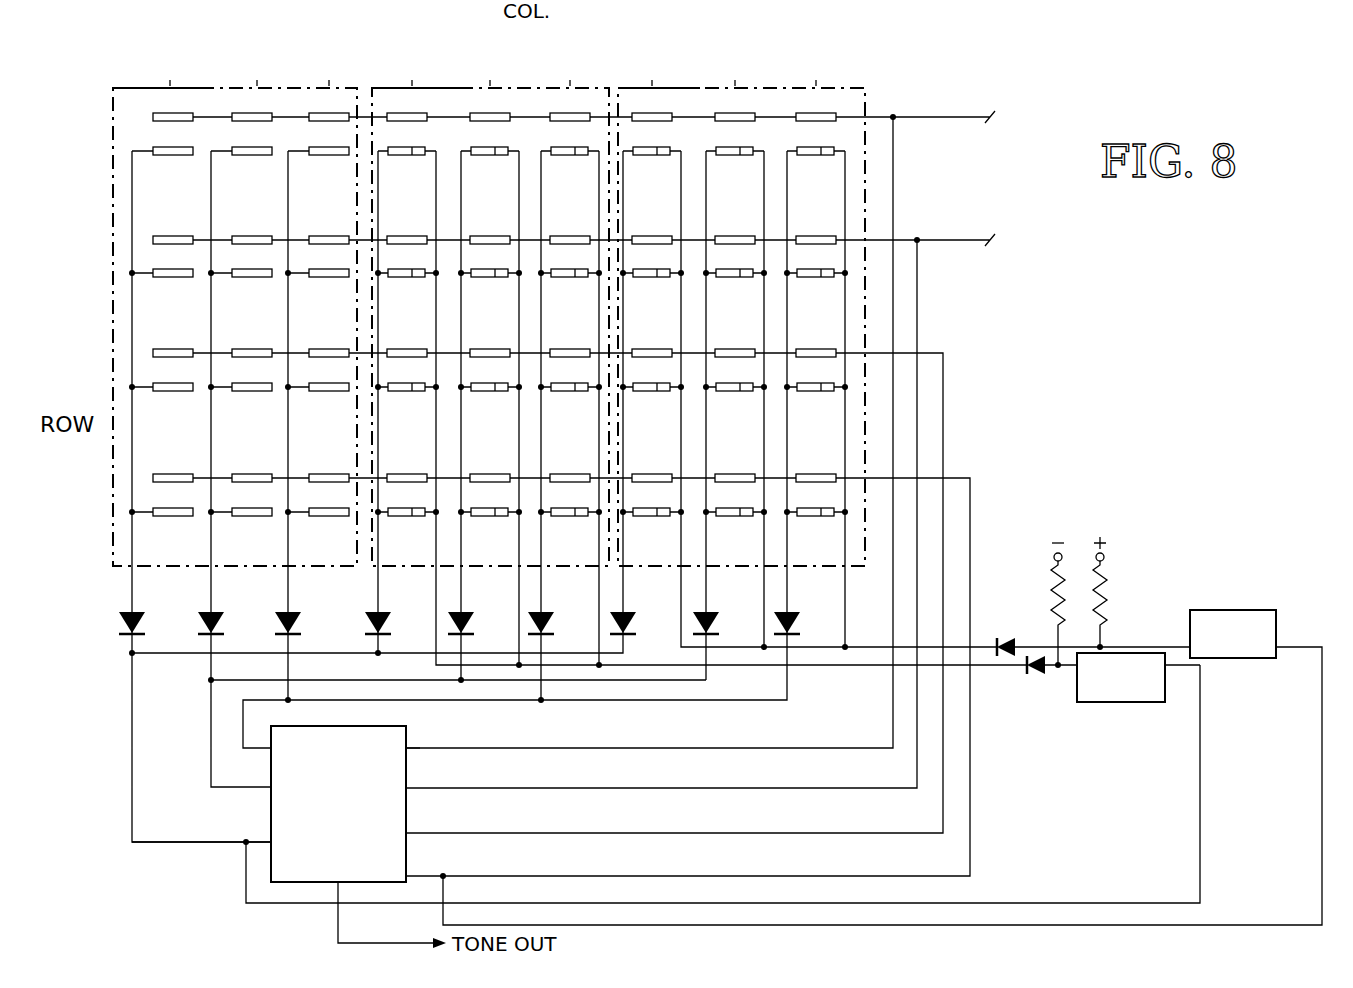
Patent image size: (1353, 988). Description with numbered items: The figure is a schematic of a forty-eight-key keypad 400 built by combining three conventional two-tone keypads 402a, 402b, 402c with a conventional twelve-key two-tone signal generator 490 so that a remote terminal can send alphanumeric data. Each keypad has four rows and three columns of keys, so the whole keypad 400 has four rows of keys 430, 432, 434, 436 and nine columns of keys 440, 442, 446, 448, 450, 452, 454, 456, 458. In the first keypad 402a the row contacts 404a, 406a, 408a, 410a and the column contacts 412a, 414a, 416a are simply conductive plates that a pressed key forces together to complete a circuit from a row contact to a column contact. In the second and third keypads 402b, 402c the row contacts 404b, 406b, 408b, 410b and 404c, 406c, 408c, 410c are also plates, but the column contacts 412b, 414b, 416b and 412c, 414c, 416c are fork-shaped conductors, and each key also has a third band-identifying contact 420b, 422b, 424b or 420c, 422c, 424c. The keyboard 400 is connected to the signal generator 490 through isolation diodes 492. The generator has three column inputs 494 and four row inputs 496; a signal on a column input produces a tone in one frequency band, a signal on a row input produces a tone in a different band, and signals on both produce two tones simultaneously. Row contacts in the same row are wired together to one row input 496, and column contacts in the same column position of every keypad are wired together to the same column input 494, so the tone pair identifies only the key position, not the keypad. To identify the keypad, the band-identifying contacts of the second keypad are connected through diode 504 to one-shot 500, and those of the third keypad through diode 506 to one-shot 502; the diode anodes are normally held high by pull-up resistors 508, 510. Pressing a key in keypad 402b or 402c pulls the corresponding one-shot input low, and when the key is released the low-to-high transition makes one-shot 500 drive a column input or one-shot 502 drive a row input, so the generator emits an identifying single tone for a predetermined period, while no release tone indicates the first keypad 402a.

The keypad 400 is at (925, 62).
The first two-tone keypad 402a is at (292, 79).
The second two-tone keypad 402b is at (448, 79).
The third two-tone keypad 402c is at (696, 79).
The row contact 404a is at (305, 113).
The row contact 404b is at (546, 113).
The row contact 404c is at (792, 113).
The row contact 406a is at (329, 234).
The row contact 406b is at (570, 234).
The row contact 406c is at (816, 234).
The row contact 408a is at (329, 347).
The row contact 408b is at (570, 347).
The row contact 408c is at (816, 347).
The row contact 410a is at (329, 472).
The row contact 410b is at (570, 472).
The row contact 410c is at (816, 472).
The column contact 412a is at (165, 517).
The column contact 412b is at (399, 517).
The column contact 412c is at (644, 517).
The column contact 414a is at (244, 517).
The column contact 414b is at (482, 517).
The column contact 414c is at (727, 517).
The column contact 416a is at (321, 517).
The column contact 416b is at (562, 517).
The column contact 416c is at (808, 517).
The band-identifying contact 420b is at (426, 506).
The band-identifying contact 420c is at (671, 506).
The band-identifying contact 422b is at (509, 506).
The band-identifying contact 422c is at (754, 506).
The band-identifying contact 424b is at (589, 506).
The band-identifying contact 424c is at (835, 506).
The row of keys 430 is at (96, 124).
The row of keys 432 is at (96, 257).
The row of keys 434 is at (96, 370).
The row of keys 436 is at (96, 493).
The column of keys 440 is at (170, 67).
The column of keys 442 is at (257, 67).
The column of keys 446 is at (329, 67).
The column of keys 448 is at (412, 67).
The column of keys 450 is at (490, 67).
The column of keys 452 is at (570, 67).
The column of keys 454 is at (652, 67).
The column of keys 456 is at (735, 67).
The column of keys 458 is at (816, 67).
The two-tone signal generator 490 is at (406, 747).
The isolation diodes 492 is at (96, 625).
The column inputs 494 is at (230, 871).
The row inputs 496 is at (502, 744).
The one-shot 500 is at (1120, 704).
The one-shot 502 is at (1246, 658).
The diode 504 is at (1040, 677).
The diode 506 is at (1022, 639).
The pull-up resistor 508 is at (1053, 570).
The pull-up resistor 510 is at (1106, 570).